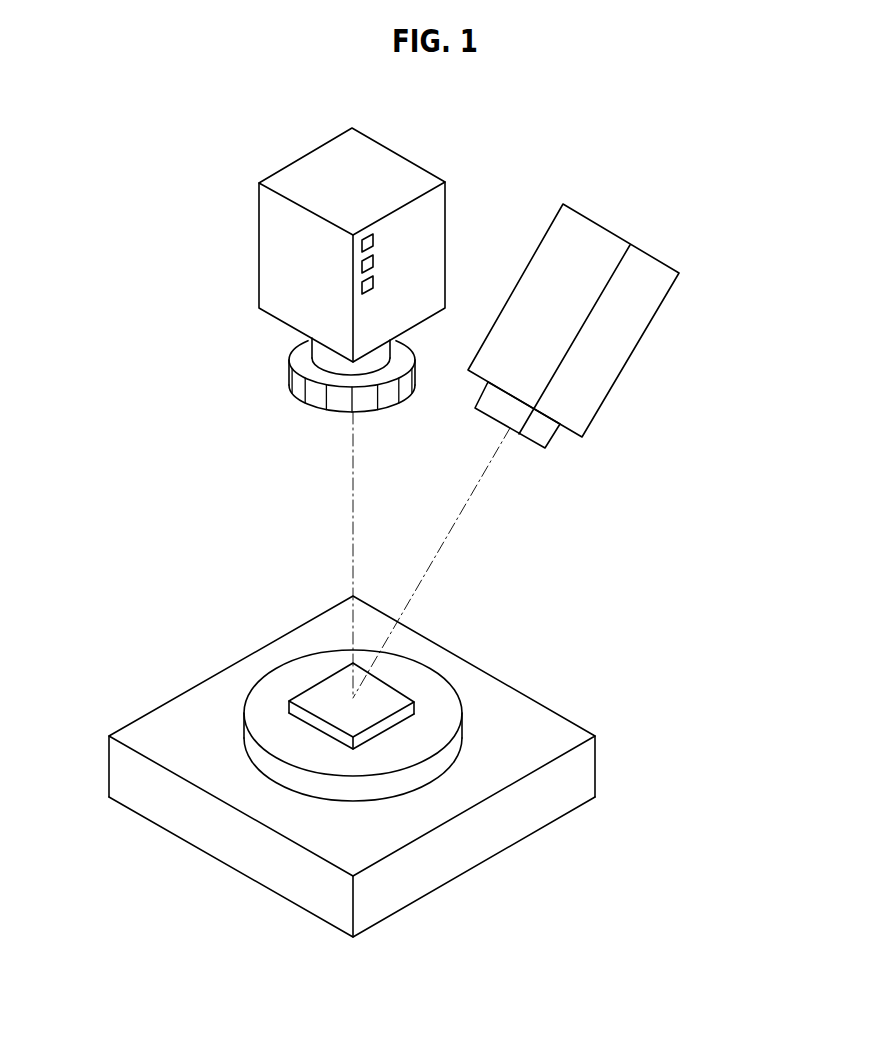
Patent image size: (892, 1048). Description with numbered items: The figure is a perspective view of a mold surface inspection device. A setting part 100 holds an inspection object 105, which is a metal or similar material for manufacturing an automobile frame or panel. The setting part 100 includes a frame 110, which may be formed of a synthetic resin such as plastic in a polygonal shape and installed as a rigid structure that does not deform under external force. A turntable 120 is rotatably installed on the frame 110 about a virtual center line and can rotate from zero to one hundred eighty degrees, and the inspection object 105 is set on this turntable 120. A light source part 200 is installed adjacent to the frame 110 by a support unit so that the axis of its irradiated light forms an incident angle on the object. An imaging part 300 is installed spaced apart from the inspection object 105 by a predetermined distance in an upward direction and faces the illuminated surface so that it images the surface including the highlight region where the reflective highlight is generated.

The setting part 100 is at (535, 898).
The inspection object 105 is at (316, 698).
The frame 110 is at (583, 770).
The turntable 120 is at (266, 718).
The light source part 200 is at (620, 345).
The imaging part 300 is at (272, 245).